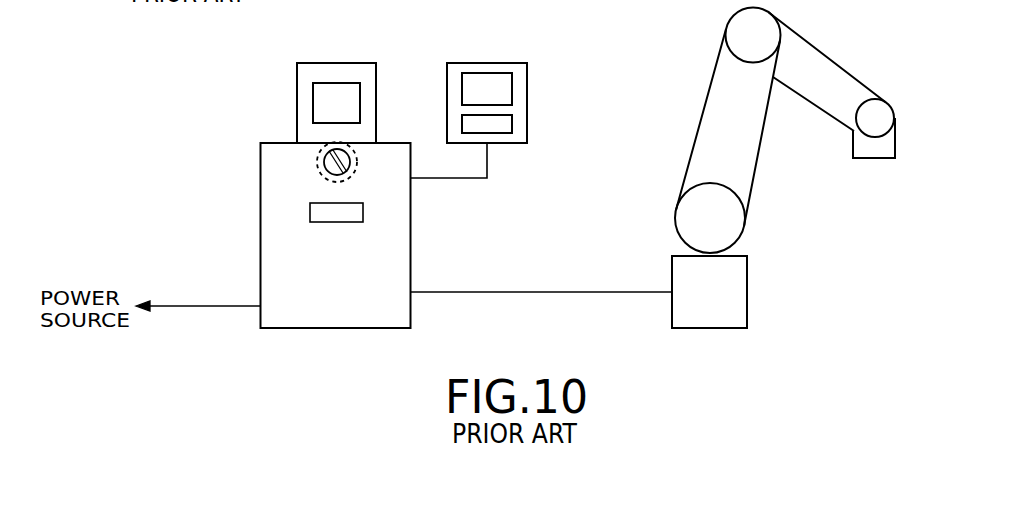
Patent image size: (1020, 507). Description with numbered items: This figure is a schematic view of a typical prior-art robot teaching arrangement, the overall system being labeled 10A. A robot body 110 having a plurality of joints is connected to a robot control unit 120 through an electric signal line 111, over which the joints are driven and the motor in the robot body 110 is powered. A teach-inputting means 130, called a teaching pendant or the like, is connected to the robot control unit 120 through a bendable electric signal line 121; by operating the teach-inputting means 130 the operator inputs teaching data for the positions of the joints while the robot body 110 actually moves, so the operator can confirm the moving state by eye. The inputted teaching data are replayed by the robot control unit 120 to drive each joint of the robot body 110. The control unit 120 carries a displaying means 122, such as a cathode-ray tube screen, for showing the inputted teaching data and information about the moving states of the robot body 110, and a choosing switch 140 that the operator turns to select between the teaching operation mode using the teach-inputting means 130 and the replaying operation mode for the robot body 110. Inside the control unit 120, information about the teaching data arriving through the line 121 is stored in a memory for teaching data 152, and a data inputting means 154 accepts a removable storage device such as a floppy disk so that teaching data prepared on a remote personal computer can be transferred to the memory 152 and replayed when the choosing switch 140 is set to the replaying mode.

The robot system (prior art) 10A is at (316, 160).
The robot body 110 is at (713, 102).
The electric signal line 111 is at (587, 290).
The robot control unit 120 is at (277, 236).
The bendable electric signal line 121 is at (463, 180).
The displaying means 122 is at (335, 72).
The teach-inputting means 130 is at (485, 68).
The choosing switch 140 is at (318, 167).
The memory for teaching data 152 is at (364, 298).
The data inputting means 154 is at (357, 212).